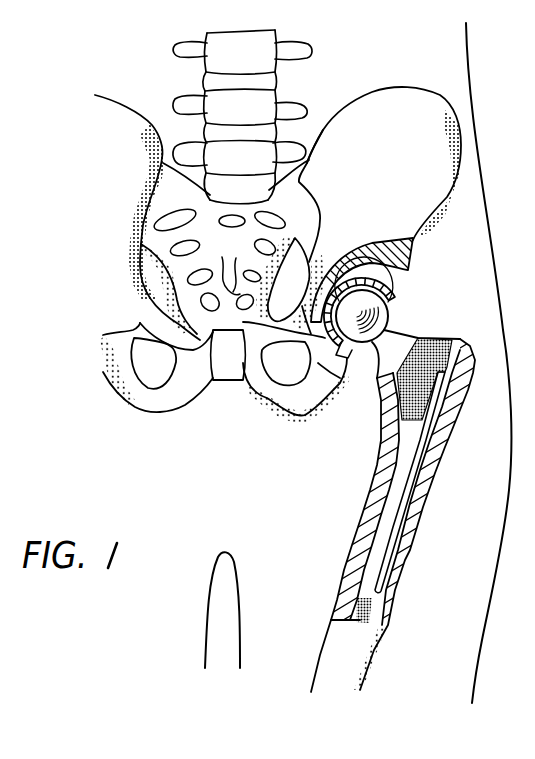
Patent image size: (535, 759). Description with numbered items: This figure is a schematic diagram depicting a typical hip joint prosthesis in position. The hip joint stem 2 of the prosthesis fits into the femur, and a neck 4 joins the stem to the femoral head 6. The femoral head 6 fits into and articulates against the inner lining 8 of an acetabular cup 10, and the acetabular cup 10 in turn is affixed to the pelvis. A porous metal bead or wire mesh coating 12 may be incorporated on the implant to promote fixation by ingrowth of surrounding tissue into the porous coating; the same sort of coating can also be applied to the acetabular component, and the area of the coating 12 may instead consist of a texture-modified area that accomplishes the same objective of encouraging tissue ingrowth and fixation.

The hip joint stem 2 is at (400, 490).
The neck 4 is at (395, 352).
The femoral head 6 is at (389, 319).
The inner lining 8 is at (399, 296).
The acetabular cup 10 is at (406, 271).
The porous metal bead or wire mesh coating 12 is at (384, 407).